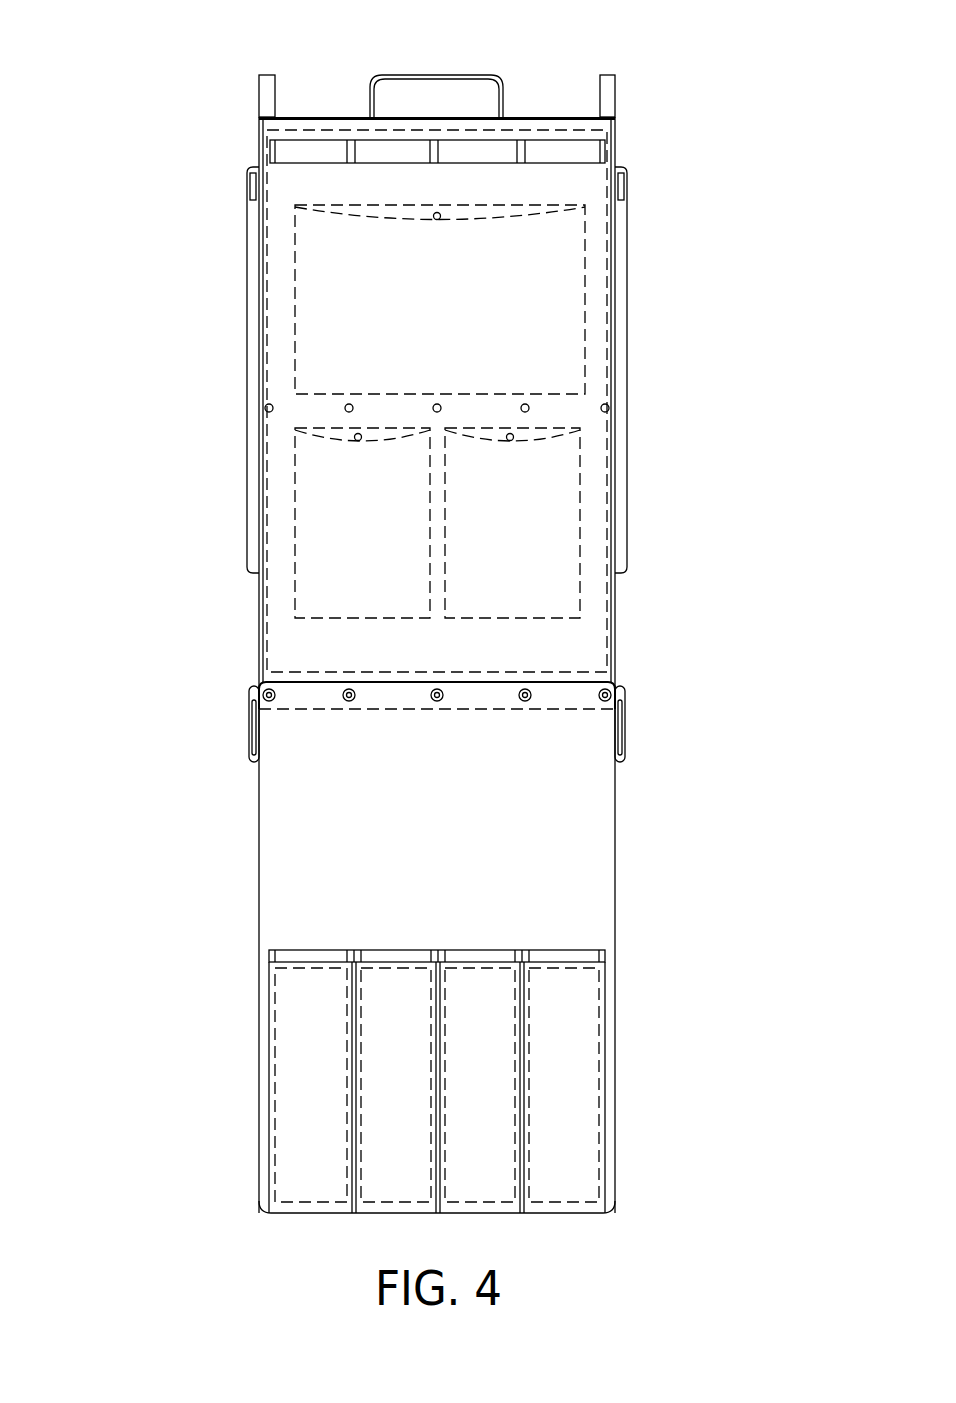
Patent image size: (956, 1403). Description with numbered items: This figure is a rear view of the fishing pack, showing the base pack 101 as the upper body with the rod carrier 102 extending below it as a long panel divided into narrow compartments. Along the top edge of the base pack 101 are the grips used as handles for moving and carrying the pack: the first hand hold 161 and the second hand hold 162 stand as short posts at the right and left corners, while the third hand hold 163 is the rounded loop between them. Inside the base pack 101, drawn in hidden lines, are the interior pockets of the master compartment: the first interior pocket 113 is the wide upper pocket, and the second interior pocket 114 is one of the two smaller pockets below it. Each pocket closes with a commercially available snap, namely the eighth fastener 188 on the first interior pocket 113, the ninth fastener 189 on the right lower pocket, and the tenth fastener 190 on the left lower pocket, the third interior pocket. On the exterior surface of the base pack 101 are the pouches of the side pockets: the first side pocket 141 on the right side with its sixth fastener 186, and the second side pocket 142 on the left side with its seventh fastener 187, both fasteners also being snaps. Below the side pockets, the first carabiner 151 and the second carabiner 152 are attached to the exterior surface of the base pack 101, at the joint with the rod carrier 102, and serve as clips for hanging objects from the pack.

The base pack 101 is at (615, 636).
The rod carrier 102 is at (615, 883).
The first interior pocket 113 is at (547, 262).
The second interior pocket 114 is at (548, 528).
The first side pocket 141 is at (627, 350).
The second side pocket 142 is at (247, 350).
The first carabiner 151 is at (623, 752).
The second carabiner 152 is at (250, 752).
The first hand hold 161 is at (612, 75).
The second hand hold 162 is at (266, 75).
The third hand hold 163 is at (425, 75).
The sixth fastener 186 is at (628, 185).
The seventh fastener 187 is at (247, 185).
The eighth fastener 188 is at (435, 217).
The ninth fastener 189 is at (510, 437).
The tenth fastener 190 is at (358, 437).